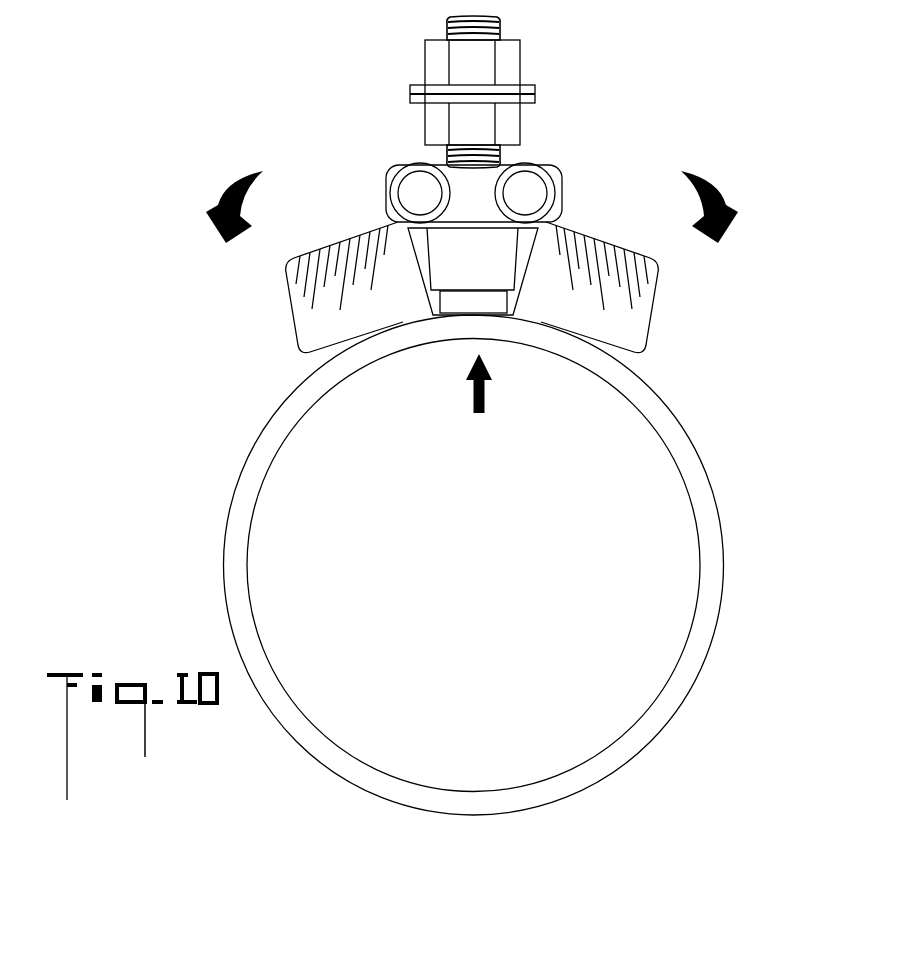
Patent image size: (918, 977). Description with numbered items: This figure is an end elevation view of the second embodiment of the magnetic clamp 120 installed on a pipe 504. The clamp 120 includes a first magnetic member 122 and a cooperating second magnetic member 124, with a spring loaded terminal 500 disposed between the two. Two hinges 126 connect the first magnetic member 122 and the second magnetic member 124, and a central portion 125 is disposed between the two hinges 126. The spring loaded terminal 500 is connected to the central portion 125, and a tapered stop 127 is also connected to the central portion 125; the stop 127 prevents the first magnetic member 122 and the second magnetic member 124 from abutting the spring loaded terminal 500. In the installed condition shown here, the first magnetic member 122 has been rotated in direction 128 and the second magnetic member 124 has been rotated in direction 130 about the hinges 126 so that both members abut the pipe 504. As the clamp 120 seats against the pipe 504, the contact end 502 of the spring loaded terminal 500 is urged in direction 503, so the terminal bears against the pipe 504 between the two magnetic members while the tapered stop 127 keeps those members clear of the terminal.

The magnetic clamp 120 is at (633, 113).
The first magnetic member 122 is at (297, 328).
The second magnetic member 124 is at (650, 330).
The central portion 125 is at (473, 193).
The hinges 126 is at (402, 202).
The tapered stop 127 is at (453, 272).
The direction 128 is at (233, 185).
The direction 130 is at (711, 185).
The spring loaded terminal 500 is at (400, 61).
The contact end 502 is at (458, 302).
The direction 503 is at (484, 402).
The pipe 504 is at (715, 628).